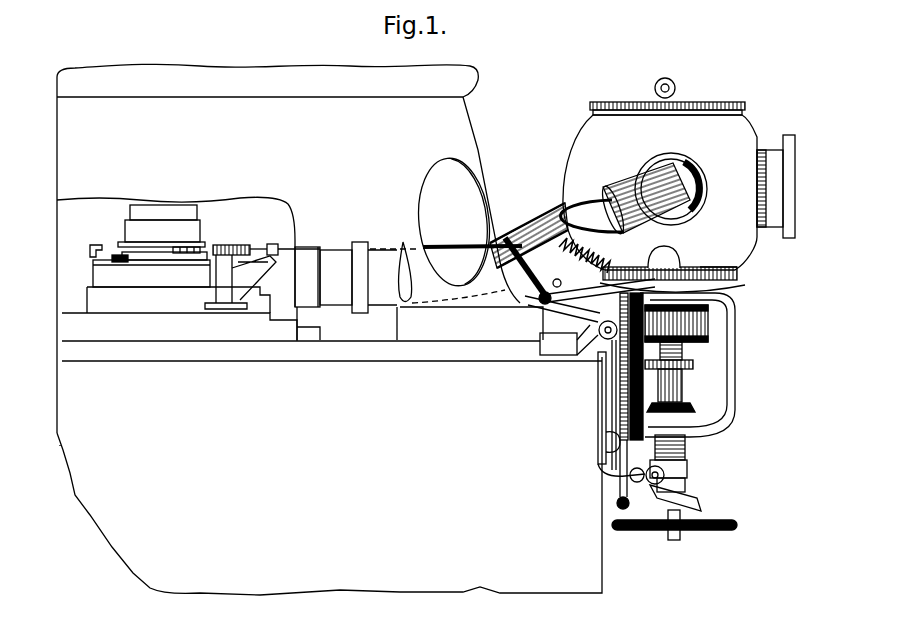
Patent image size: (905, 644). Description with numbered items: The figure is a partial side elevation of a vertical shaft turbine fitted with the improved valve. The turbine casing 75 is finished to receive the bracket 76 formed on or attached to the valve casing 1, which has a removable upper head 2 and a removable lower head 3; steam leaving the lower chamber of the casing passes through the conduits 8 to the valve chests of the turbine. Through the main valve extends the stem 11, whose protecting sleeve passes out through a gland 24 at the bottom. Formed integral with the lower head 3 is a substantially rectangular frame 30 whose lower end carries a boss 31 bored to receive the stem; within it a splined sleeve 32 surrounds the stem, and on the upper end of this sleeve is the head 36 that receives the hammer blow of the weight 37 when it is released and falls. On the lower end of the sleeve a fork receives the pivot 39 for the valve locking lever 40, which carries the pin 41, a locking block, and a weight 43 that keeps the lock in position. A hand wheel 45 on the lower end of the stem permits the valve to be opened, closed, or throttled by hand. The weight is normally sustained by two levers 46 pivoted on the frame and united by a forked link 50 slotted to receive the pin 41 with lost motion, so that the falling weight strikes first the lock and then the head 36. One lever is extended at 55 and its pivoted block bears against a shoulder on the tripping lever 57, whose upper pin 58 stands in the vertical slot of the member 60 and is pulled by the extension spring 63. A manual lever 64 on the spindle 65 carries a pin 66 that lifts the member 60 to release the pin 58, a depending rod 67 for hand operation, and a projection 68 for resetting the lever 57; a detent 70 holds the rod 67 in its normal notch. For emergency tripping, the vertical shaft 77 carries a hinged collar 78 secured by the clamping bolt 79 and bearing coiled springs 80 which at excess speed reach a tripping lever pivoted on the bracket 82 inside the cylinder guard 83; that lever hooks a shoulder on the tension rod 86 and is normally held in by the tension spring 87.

The valve casing 1 is at (592, 142).
The upper head 2 is at (745, 105).
The lower head 3 is at (740, 274).
The conduits 8 is at (530, 218).
The stem 11 is at (682, 352).
The gland 24 is at (714, 258).
The frame 30 is at (736, 392).
The boss 31 is at (686, 443).
The sleeve 32 is at (683, 392).
The head 36 is at (695, 366).
The weight 37 is at (712, 325).
The pivot 39 is at (690, 476).
The valve locking lever 40 is at (605, 470).
The pin 41 is at (618, 480).
The weight 43 is at (700, 502).
The hand wheel 45 is at (735, 521).
The levers 46 is at (612, 362).
The forked link 50 is at (643, 416).
The lever extension 55 is at (569, 340).
The tripping lever 57 is at (524, 305).
The pin 58 is at (532, 243).
The member 60 is at (520, 233).
The extension spring 63 is at (598, 260).
The lever 64 is at (587, 305).
The spindle 65 is at (530, 292).
The pin 66 is at (490, 268).
The rod 67 is at (618, 378).
The projection 68 is at (561, 282).
The detent 70 is at (606, 434).
The turbine casing 75 is at (230, 426).
The bracket 76 is at (598, 398).
The vertical shaft 77 is at (130, 212).
The collar 78 is at (145, 258).
The clamping bolt 79 is at (151, 271).
The springs 80 is at (184, 267).
The bracket 82 is at (215, 296).
The cylinder guard 83 is at (90, 248).
The tension rod 86 is at (458, 246).
The tension spring 87 is at (237, 248).